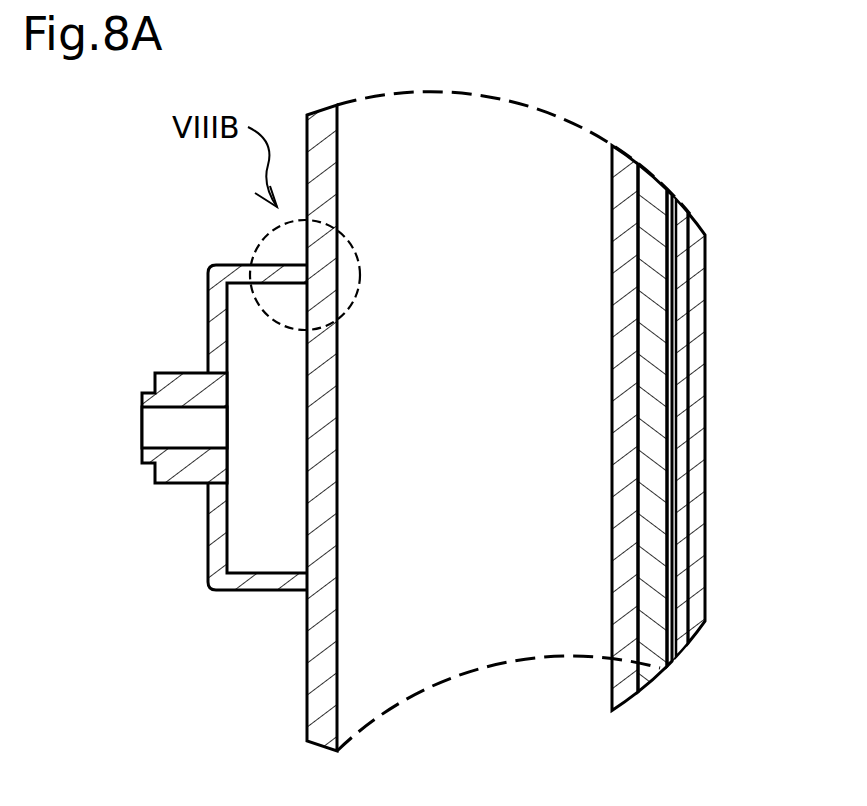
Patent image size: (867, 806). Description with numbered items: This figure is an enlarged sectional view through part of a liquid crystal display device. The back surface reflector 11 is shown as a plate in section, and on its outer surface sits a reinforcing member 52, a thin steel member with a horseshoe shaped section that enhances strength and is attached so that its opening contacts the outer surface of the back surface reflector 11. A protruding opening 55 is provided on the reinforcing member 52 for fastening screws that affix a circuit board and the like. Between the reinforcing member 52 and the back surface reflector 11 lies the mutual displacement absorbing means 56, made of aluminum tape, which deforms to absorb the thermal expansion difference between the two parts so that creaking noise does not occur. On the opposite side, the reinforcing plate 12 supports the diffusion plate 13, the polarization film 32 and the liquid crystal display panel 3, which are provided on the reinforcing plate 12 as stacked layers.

The liquid crystal display panel 3 is at (697, 452).
The back surface reflector 11 is at (315, 703).
The reinforcing plate 12 is at (622, 165).
The diffusion plate 13 is at (655, 193).
The polarization film 32 is at (670, 663).
The reinforcing member 52 is at (213, 572).
The protruding opening 55 is at (157, 374).
The mutual displacement absorbing means 56 is at (305, 535).